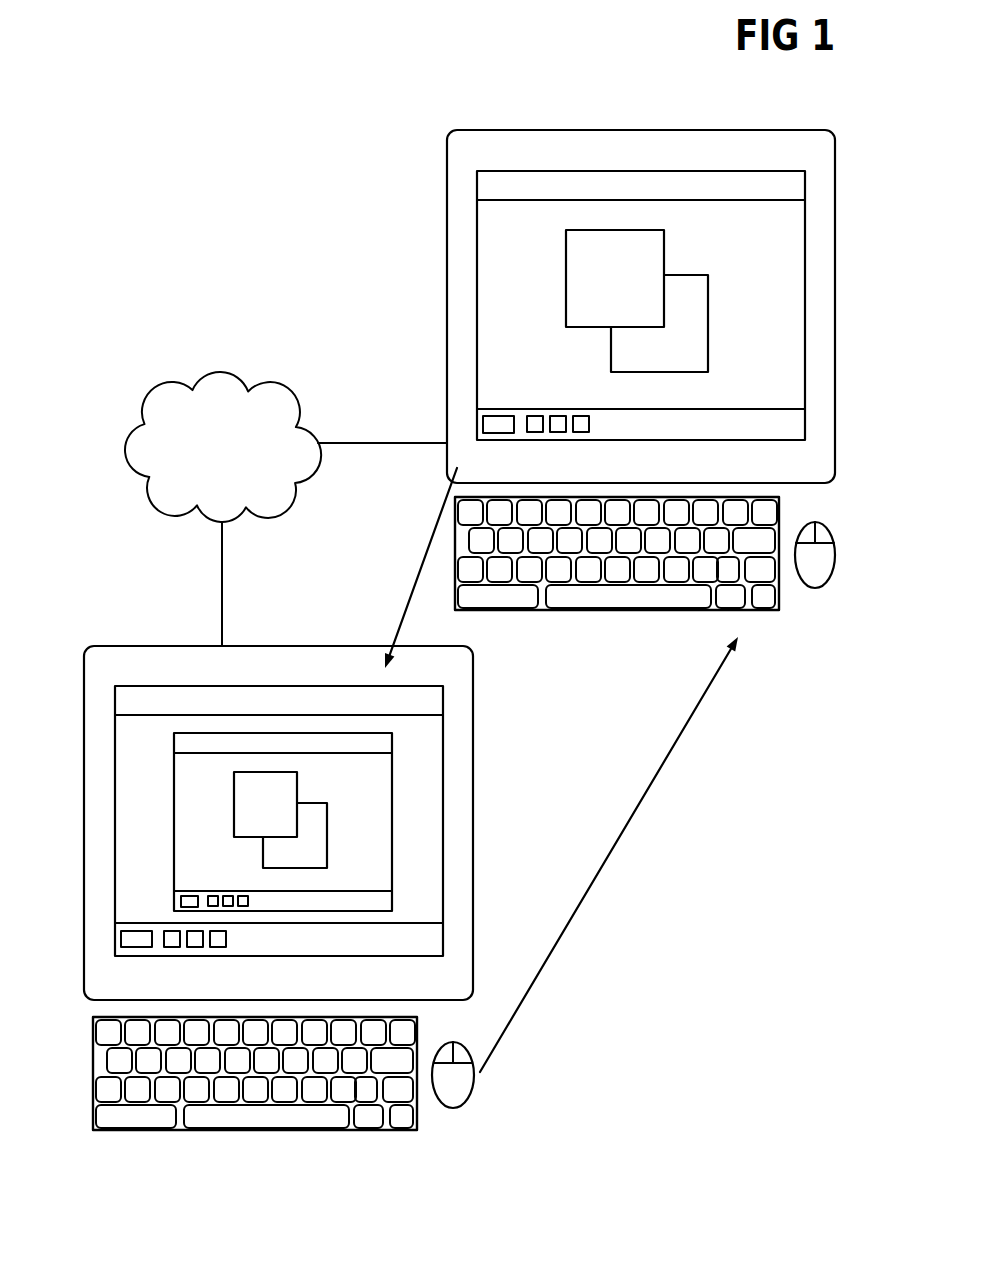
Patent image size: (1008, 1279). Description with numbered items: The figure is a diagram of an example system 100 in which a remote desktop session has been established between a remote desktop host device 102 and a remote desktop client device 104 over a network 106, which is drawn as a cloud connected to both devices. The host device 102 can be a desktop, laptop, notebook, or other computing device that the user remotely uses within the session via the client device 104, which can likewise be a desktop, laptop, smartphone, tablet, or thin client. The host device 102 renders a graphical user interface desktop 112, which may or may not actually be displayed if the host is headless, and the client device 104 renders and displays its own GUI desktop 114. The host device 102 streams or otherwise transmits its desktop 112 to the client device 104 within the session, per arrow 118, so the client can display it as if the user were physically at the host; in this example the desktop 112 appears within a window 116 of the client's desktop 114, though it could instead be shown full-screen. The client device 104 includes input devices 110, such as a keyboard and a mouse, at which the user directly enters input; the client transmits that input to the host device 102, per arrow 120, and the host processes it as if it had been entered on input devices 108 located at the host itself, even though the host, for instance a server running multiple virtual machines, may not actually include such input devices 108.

The system 100 is at (172, 163).
The remote desktop host device 102 is at (835, 165).
The remote desktop client device 104 is at (84, 698).
The network 106 is at (205, 375).
The input devices 108 is at (838, 518).
The input devices 110 is at (93, 1008).
The GUI desktop 112 is at (807, 257).
The GUI desktop 114 is at (443, 778).
The window 116 is at (173, 842).
The arrow 118 is at (408, 602).
The arrow 120 is at (608, 857).